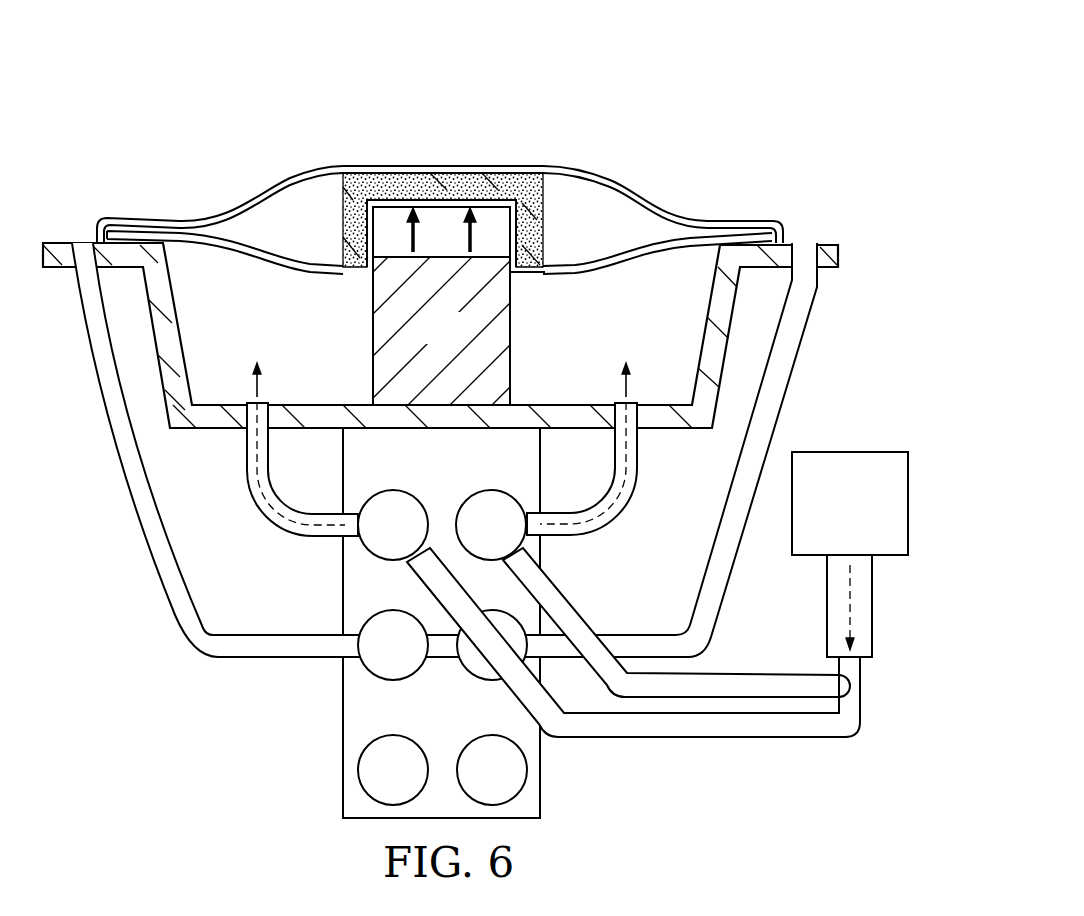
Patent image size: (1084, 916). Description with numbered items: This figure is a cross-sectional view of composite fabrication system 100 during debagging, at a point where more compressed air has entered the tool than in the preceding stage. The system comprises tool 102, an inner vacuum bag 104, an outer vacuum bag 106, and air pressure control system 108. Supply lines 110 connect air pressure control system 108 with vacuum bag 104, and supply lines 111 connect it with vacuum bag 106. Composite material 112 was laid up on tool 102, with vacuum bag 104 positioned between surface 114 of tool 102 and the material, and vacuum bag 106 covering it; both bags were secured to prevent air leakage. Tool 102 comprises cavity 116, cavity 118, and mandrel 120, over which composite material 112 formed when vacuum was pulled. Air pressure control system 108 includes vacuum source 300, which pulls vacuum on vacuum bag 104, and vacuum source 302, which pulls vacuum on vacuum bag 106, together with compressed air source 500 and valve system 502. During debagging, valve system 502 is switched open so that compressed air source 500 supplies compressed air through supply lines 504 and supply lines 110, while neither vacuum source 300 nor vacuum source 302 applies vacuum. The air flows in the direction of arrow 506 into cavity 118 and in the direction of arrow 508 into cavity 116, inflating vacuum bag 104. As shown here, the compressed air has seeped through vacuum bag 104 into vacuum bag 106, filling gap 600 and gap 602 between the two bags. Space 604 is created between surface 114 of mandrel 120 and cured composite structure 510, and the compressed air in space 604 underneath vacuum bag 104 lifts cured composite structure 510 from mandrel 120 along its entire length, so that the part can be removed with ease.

The composite fabrication system 100 is at (368, 73).
The tool 102 is at (846, 251).
The vacuum bag 104 is at (222, 249).
The vacuum bag 106 is at (270, 184).
The air pressure control system 108 is at (554, 789).
The supply lines 110 is at (621, 545).
The supply lines 111 is at (262, 685).
The composite material 112 is at (379, 180).
The surface 114 is at (443, 240).
The cavity 116 is at (242, 338).
The cavity 118 is at (621, 338).
The mandrel 120 is at (422, 340).
The vacuum source 300 is at (355, 481).
The vacuum source 302 is at (500, 689).
The compressed air source 500 is at (829, 517).
The valve system 502 is at (885, 607).
The supply lines 504 is at (750, 650).
The arrow 506 is at (626, 394).
The arrow 508 is at (258, 393).
The cured composite structure 510 is at (553, 264).
The gap 600 is at (276, 235).
The gap 602 is at (566, 235).
The space 604 is at (494, 216).